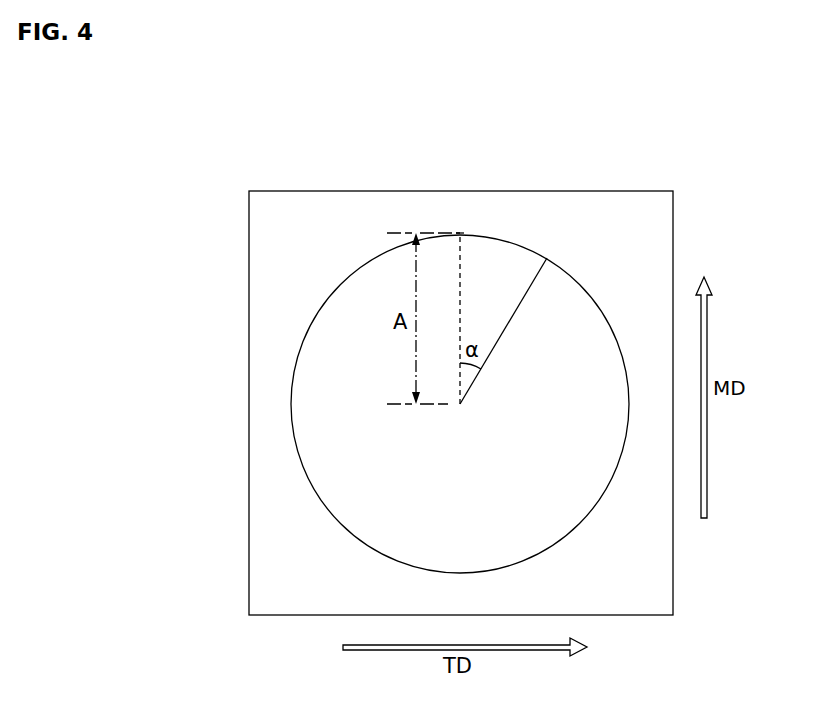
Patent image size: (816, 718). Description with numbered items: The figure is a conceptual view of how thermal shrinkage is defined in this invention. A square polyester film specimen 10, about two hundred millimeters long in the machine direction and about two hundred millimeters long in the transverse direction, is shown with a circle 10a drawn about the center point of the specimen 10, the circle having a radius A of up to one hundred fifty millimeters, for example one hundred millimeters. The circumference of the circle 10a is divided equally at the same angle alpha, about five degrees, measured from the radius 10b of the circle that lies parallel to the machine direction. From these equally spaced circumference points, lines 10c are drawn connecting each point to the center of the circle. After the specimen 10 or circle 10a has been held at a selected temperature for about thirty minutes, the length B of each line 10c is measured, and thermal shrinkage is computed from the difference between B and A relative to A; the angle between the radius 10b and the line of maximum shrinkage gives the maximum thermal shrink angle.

The polyester film specimen 10 is at (656, 171).
The circle 10a is at (588, 517).
The radius of the circle parallel to MD 10b is at (460, 258).
The lines connecting a point on the circumference and the center of the circle 10c is at (543, 262).